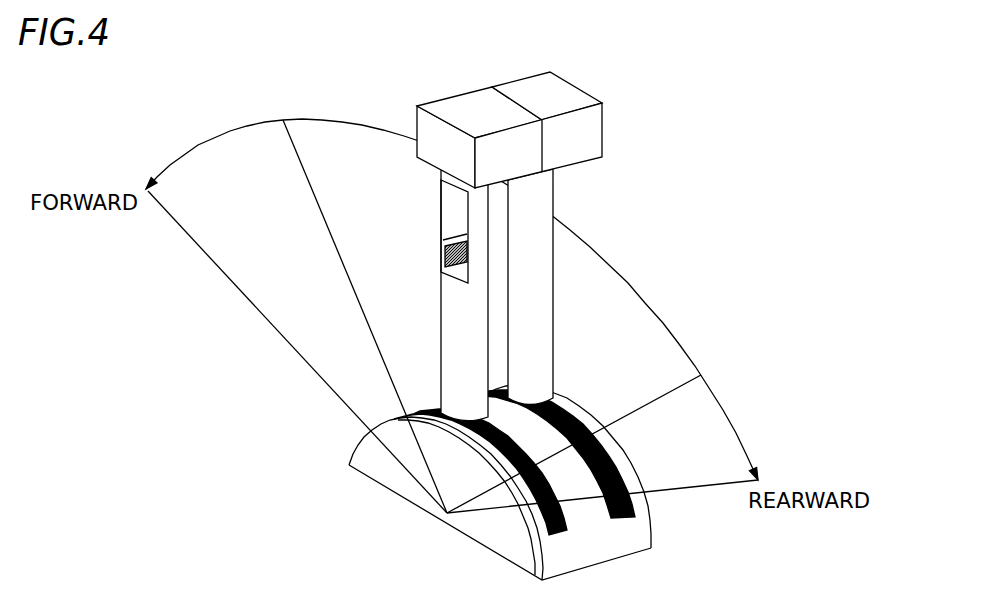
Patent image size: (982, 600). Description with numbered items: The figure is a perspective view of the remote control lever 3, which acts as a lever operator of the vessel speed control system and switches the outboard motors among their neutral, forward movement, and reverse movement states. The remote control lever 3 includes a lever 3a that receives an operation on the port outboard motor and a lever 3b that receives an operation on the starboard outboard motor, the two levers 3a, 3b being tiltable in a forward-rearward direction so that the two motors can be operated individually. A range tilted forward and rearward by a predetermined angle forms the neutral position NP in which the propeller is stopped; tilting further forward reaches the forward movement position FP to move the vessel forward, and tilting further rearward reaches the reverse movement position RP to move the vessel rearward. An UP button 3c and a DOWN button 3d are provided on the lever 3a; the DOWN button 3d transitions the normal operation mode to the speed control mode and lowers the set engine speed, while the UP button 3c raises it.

The remote control lever 3 is at (527, 229).
The lever 3a is at (465, 103).
The lever 3b is at (538, 83).
The UP button 3c is at (442, 193).
The DOWN button 3d is at (443, 238).
The forward movement position FP is at (293, 276).
The neutral position NP is at (646, 195).
The reverse movement position RP is at (624, 401).